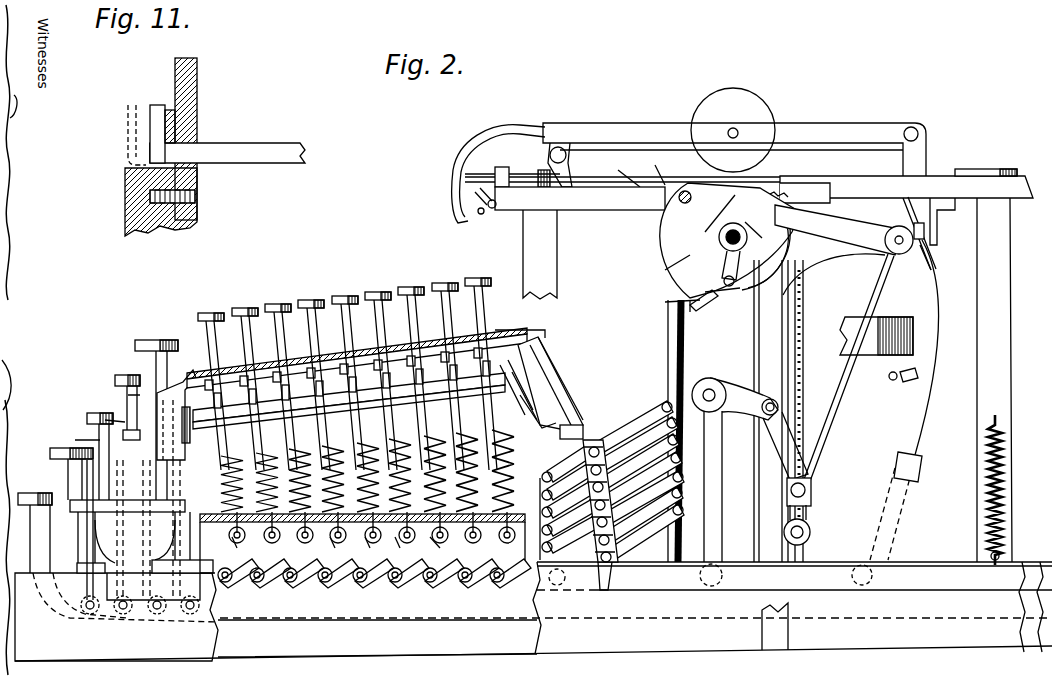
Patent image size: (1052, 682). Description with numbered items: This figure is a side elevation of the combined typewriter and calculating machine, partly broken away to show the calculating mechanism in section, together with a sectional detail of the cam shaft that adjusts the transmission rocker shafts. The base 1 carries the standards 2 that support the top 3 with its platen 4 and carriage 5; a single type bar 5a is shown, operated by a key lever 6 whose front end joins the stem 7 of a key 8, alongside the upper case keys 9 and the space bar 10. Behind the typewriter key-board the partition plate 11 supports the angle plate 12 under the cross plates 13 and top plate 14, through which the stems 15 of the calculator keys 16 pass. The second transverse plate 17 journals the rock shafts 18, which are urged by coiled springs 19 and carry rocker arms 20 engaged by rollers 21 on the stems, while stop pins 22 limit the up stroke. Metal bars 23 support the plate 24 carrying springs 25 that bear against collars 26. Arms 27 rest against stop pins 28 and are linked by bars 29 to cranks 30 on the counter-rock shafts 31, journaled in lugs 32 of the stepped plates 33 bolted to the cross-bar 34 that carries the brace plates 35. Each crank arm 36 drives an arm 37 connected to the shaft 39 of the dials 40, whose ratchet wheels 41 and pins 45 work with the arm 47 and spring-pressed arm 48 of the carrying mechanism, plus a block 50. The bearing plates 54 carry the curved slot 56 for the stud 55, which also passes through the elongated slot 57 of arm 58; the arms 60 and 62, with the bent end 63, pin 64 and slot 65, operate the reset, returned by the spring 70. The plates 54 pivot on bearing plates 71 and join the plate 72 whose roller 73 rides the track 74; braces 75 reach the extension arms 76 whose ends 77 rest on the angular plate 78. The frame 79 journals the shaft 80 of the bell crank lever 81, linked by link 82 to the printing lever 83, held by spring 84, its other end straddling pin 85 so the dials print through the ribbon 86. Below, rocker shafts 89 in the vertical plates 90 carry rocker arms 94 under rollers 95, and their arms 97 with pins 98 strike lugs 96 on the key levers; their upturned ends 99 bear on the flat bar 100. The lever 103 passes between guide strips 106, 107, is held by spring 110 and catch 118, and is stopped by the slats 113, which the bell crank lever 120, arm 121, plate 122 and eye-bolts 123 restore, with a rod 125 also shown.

In FIG. 11, the base 1 is at (128, 232).
In FIG. 2, the base 1 is at (195, 655).
In FIG. 2, the standards 2 is at (525, 250).
In FIG. 2, the top 3 is at (975, 185).
In FIG. 2, the platen 4 is at (692, 100).
In FIG. 2, the carriage 5 is at (596, 124).
In FIG. 2, the type bar 5a is at (913, 347).
In FIG. 2, the key levers 6 is at (377, 638).
In FIG. 2, the stems 7 is at (101, 410).
In FIG. 2, the keys 8 is at (116, 378).
In FIG. 2, the upper case keys 9 is at (140, 340).
In FIG. 2, the space bar 10 is at (28, 493).
In FIG. 2, the transverse partition plate 11 is at (145, 537).
In FIG. 2, the angle plate 12 is at (177, 390).
In FIG. 2, the cross plates 13 is at (303, 355).
In FIG. 2, the top plate 14 is at (370, 350).
In FIG. 2, the stems 15 is at (252, 330).
In FIG. 2, the calculator keys 16 is at (230, 313).
In FIG. 2, the second transverse plate 17 is at (530, 365).
In FIG. 2, the rock shafts 18 is at (340, 416).
In FIG. 2, the coiled springs 19 is at (187, 443).
In FIG. 2, the rocker arms 20 is at (349, 403).
In FIG. 2, the roller 21 is at (352, 384).
In FIG. 2, the stop pin 22 is at (343, 359).
In FIG. 2, the metal bars 23 is at (391, 547).
In FIG. 2, the plate 24 is at (300, 522).
In FIG. 2, the springs 25 is at (238, 470).
In FIG. 2, the collars 26 is at (372, 478).
In FIG. 2, the arms 27 is at (540, 385).
In FIG. 2, the stop pins 28 is at (560, 372).
In FIG. 2, the bar 29 is at (556, 410).
In FIG. 2, the crank 30 is at (575, 603).
In FIG. 2, the counter-rock shafts 31 is at (596, 440).
In FIG. 2, the lugs 32 is at (600, 445).
In FIG. 2, the stepped plates 33 is at (608, 592).
In FIG. 2, the cross-bar 34 is at (575, 420).
In FIG. 2, the angled brace plates 35 is at (545, 400).
In FIG. 2, the crank arm 36 is at (645, 400).
In FIG. 2, the arm 37 is at (688, 362).
In FIG. 2, the shaft 39 is at (722, 245).
In FIG. 2, the calculator dials 40 is at (730, 240).
In FIG. 2, the ratchet wheel 41 is at (707, 220).
In FIG. 2, the pins 45 is at (740, 185).
In FIG. 2, the arm 47 is at (805, 322).
In FIG. 2, the spring-pressed pivoted arm 48 is at (805, 286).
In FIG. 2, the block 50 is at (805, 194).
In FIG. 2, the bearing plates 54 is at (662, 262).
In FIG. 2, the stud 55 is at (735, 296).
In FIG. 2, the curved slot 56 is at (790, 258).
In FIG. 2, the elongated slot 57 is at (766, 259).
In FIG. 2, the arm 58 is at (768, 255).
In FIG. 2, the arm 60 is at (724, 280).
In FIG. 2, the arm 62 is at (690, 431).
In FIG. 2, the bent end 63 is at (713, 431).
In FIG. 2, the headed pin 64 is at (705, 308).
In FIG. 2, the slot 65 is at (666, 302).
In FIG. 2, the coiled spring 70 is at (762, 233).
In FIG. 2, the bearing plates 71 is at (661, 167).
In FIG. 2, the plate 72 is at (840, 345).
In FIG. 2, the flanged roller 73 is at (812, 530).
In FIG. 2, the track 74 is at (880, 485).
In FIG. 2, the braces 75 is at (835, 430).
In FIG. 2, the rear extension arms 76 is at (862, 240).
In FIG. 2, the ends 77 is at (930, 238).
In FIG. 2, the angular plate 78 is at (938, 262).
In FIG. 2, the U-shaped metal frame 79 is at (760, 478).
In FIG. 2, the shaft 80 is at (766, 414).
In FIG. 2, the bell crank lever 81 is at (744, 392).
In FIG. 2, the link 82 is at (765, 476).
In FIG. 2, the printing lever 83 is at (200, 608).
In FIG. 2, the coiled spring 84 is at (1008, 488).
In FIG. 2, the pin 85 is at (812, 490).
In FIG. 2, the typewriter ribbon 86 is at (768, 152).
In FIG. 11, the rocker shafts 89 is at (265, 147).
In FIG. 2, the rocker shafts 89 is at (228, 583).
In FIG. 11, the vertical plates 90 is at (198, 120).
In FIG. 2, the rocker arms 94 is at (272, 583).
In FIG. 2, the rollers 95 is at (351, 547).
In FIG. 2, the vertical lug 96 is at (335, 585).
In FIG. 2, the arm 97 is at (363, 547).
In FIG. 2, the pin 98 is at (331, 547).
In FIG. 11, the upturned ends 99 is at (157, 105).
In FIG. 11, the flat bar 100 is at (165, 124).
In FIG. 2, the lever 103 is at (740, 167).
In FIG. 2, the guide strip 106 is at (534, 168).
In FIG. 2, the guide strip 107 is at (570, 175).
In FIG. 2, the coiled spring 110 is at (986, 169).
In FIG. 2, the stop arms 113 is at (634, 167).
In FIG. 2, the spring-pressed catch 118 is at (503, 167).
In FIG. 2, the bell crank lever 120 is at (497, 187).
In FIG. 2, the arm 121 is at (480, 214).
In FIG. 2, the plate 122 is at (478, 195).
In FIG. 2, the eye-bolts 123 is at (494, 208).
In FIG. 2, the rod 125 is at (462, 178).